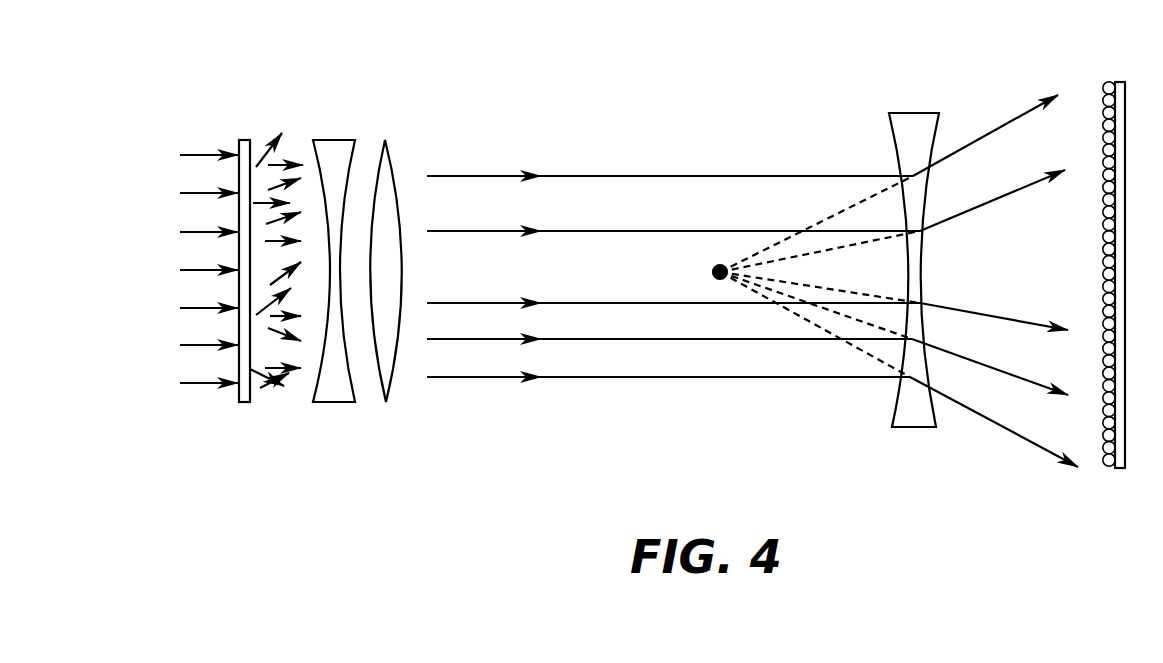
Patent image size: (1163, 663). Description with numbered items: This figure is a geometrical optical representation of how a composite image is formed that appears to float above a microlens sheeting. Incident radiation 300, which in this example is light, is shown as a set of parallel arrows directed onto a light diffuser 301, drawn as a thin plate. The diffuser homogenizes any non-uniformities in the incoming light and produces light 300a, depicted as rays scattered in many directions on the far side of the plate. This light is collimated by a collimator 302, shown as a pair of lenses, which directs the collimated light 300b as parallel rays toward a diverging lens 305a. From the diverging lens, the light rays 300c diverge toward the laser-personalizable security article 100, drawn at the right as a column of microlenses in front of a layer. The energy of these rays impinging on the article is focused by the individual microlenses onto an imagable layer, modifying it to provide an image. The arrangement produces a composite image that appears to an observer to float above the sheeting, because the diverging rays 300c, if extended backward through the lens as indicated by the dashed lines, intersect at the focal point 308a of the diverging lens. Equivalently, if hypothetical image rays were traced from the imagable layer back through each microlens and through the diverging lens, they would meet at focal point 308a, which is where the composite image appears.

The incident radiation 300 is at (196, 152).
The light diffuser 301 is at (243, 403).
The light 300a is at (277, 388).
The collimator 302 is at (381, 158).
The light 300b is at (725, 135).
The focal point 308a is at (717, 280).
The diverging lens 305a is at (900, 103).
The light rays 300c is at (993, 120).
The laser-personalizable security article 100 is at (1151, 86).